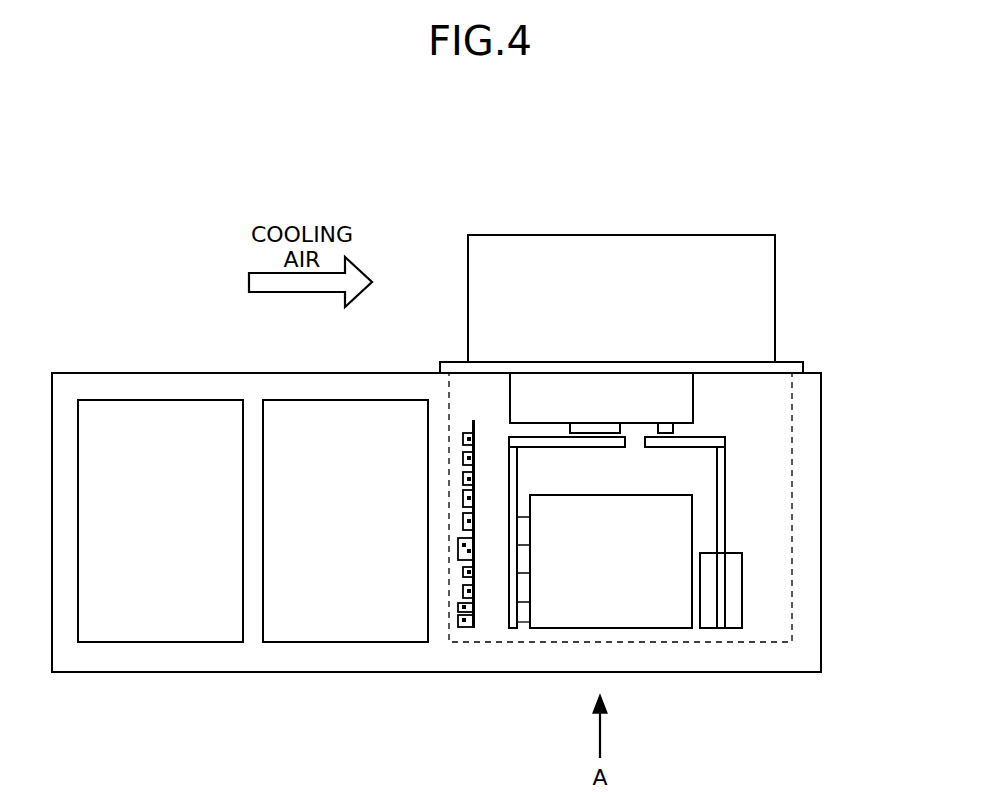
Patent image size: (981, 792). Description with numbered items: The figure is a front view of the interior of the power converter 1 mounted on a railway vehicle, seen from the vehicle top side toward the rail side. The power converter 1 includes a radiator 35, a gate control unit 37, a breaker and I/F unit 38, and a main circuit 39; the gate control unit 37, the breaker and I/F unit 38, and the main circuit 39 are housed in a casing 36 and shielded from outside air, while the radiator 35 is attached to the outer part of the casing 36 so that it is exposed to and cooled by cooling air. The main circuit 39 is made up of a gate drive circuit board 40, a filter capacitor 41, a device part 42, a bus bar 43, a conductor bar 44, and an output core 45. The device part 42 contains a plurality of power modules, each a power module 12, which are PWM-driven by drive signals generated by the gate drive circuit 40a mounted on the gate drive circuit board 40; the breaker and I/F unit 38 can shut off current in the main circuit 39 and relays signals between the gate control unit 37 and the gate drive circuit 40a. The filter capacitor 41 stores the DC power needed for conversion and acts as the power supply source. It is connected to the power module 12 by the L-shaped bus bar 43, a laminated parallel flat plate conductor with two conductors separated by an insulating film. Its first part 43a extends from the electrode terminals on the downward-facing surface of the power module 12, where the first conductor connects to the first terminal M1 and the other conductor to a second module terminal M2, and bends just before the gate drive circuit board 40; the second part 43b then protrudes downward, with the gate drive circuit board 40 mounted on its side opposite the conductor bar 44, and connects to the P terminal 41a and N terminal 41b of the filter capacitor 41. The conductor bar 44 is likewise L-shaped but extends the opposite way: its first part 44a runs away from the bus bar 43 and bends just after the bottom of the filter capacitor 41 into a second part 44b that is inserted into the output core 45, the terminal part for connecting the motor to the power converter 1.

The power converter 1 is at (360, 180).
The power module 12 is at (693, 392).
The radiator 35 is at (522, 235).
The first terminal M1 is at (597, 428).
The second connection terminal M2 is at (673, 428).
The casing 36 is at (175, 373).
The gate control unit 37 is at (163, 642).
The breaker and I/F unit 38 is at (348, 642).
The main circuit 39 is at (792, 540).
The gate drive circuit board 40 is at (456, 600).
The gate drive circuit 40a is at (465, 630).
The filter capacitor 41 is at (604, 637).
The P terminal 41a is at (522, 526).
The N terminal 41b is at (522, 588).
The device part 42 is at (748, 410).
The bus bar 43 is at (556, 586).
The first part 43a is at (553, 448).
The second part 43b is at (530, 618).
The conductor bar 44 is at (772, 532).
The first part 44a is at (678, 448).
The second part 44b is at (722, 597).
The output core 45 is at (735, 628).